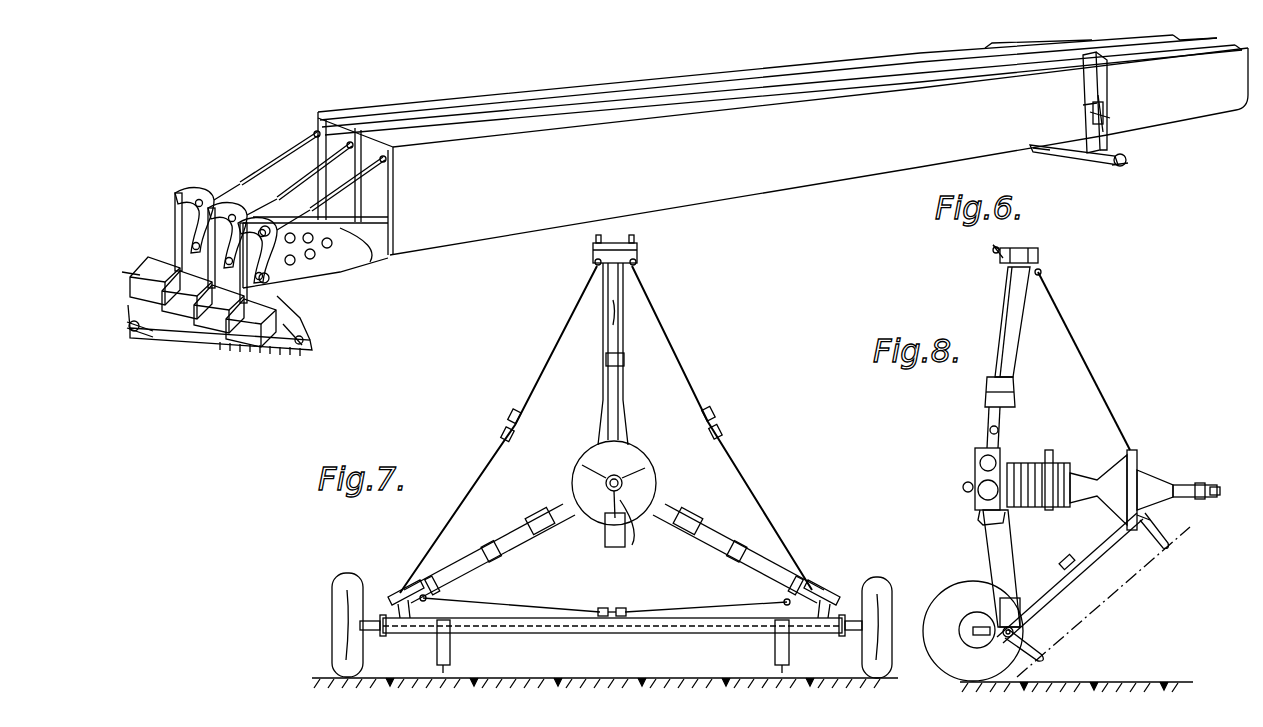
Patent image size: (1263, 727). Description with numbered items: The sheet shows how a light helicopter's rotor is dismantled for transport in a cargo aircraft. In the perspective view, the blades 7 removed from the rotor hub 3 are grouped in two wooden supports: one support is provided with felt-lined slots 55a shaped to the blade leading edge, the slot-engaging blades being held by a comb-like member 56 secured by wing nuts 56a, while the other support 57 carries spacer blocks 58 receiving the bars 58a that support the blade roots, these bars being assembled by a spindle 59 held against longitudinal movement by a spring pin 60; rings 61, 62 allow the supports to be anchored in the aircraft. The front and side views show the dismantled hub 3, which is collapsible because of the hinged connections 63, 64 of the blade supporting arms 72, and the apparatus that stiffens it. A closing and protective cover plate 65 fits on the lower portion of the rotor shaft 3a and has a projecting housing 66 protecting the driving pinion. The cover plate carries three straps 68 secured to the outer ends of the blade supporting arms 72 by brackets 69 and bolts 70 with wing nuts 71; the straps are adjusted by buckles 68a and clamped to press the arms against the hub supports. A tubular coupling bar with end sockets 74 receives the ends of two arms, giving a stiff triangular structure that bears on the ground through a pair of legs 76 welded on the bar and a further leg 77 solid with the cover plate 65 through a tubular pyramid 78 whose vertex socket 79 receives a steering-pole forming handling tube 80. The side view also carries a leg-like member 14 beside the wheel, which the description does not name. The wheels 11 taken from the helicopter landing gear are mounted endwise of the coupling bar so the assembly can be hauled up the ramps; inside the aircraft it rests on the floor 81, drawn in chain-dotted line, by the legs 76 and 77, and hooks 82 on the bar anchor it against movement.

In FIG. 6, the blades 7 is at (500, 100).
In FIG. 6, the slots 55a is at (1083, 112).
In FIG. 6, the comb-like member 56 is at (1100, 98).
In FIG. 6, the wing nuts 56a is at (1110, 122).
In FIG. 6, the closing and protective cover plate 65 is at (1062, 160).
In FIG. 7, the closing and protective cover plate 65 is at (630, 458).
In FIG. 8, the closing and protective cover plate 65 is at (1138, 460).
In FIG. 6, the ring 61 is at (1125, 166).
In FIG. 6, the bars 58a is at (176, 205).
In FIG. 6, the spacer blocks 58 is at (160, 262).
In FIG. 6, the spindle 59 is at (130, 275).
In FIG. 6, the support 57 is at (221, 344).
In FIG. 6, the ring 62 is at (138, 338).
In FIG. 6, the spring pin 60 is at (302, 349).
In FIG. 7, the brackets 69 is at (637, 250).
In FIG. 7, the buckles 68a is at (613, 358).
In FIG. 7, the straps 68 is at (618, 372).
In FIG. 8, the straps 68 is at (1085, 338).
In FIG. 7, the handling tube 80 is at (604, 488).
In FIG. 8, the handling tube 80 is at (1218, 489).
In FIG. 7, the tubular pyramid 78 is at (666, 634).
In FIG. 8, the tubular pyramid 78 is at (1185, 528).
In FIG. 7, the projecting housing 66 is at (643, 530).
In FIG. 8, the projecting housing 66 is at (1160, 478).
In FIG. 7, the leg 77 is at (624, 548).
In FIG. 8, the leg 77 is at (1170, 535).
In FIG. 7, the sockets 74 is at (412, 592).
In FIG. 7, the blade supporting arms 72 is at (452, 564).
In FIG. 8, the blade supporting arms 72 is at (1018, 334).
In FIG. 7, the wheels 11 is at (332, 622).
In FIG. 8, the wheels 11 is at (966, 594).
In FIG. 7, the legs 76 is at (437, 650).
In FIG. 8, the legs 76 is at (1095, 572).
In FIG. 8, the wing nuts 71 is at (1025, 247).
In FIG. 8, the bolts 70 is at (996, 254).
In FIG. 8, the rotor hub 3 is at (1020, 470).
In FIG. 8, the rotor shaft 3a is at (1065, 470).
In FIG. 8, the socket 79 is at (1195, 484).
In FIG. 8, the hinged connection 63 is at (980, 495).
In FIG. 8, the hinged connection 64 is at (978, 518).
In FIG. 8, the leg 14 is at (1012, 585).
In FIG. 8, the floor 81 is at (1125, 590).
In FIG. 8, the hooks 82 is at (958, 677).